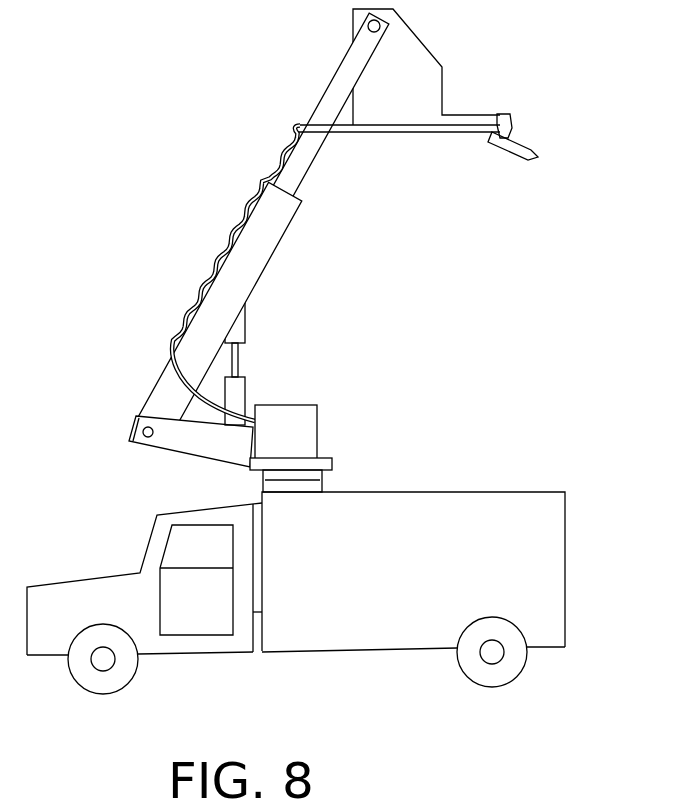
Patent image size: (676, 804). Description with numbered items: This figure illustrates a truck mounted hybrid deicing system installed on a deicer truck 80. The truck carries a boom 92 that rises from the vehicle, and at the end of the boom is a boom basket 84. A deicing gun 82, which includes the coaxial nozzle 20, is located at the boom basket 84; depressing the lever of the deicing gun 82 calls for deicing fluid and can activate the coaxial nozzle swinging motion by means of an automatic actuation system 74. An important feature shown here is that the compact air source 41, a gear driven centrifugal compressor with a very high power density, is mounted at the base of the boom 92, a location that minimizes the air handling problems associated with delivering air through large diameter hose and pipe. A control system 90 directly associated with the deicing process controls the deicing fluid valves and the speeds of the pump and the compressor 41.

The coaxial nozzle 20 is at (562, 113).
The compact air source 41 is at (318, 416).
The automatic actuation system 74 is at (423, 579).
The deicer truck 80 is at (210, 702).
The deicing gun 82 is at (502, 148).
The boom basket 84 is at (424, 42).
The control system 90 is at (452, 510).
The boom 92 is at (160, 391).